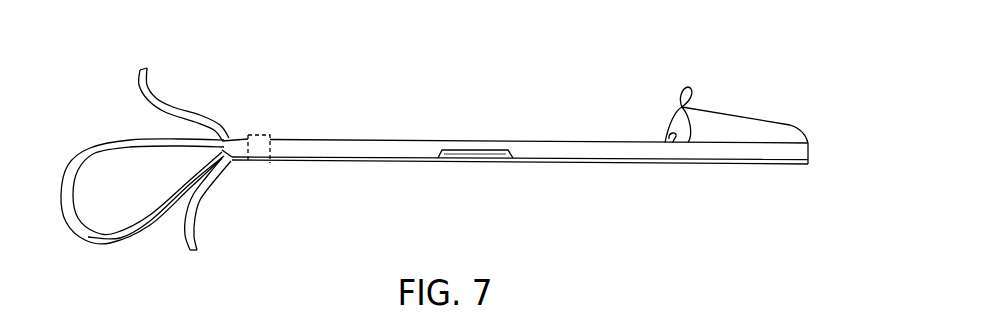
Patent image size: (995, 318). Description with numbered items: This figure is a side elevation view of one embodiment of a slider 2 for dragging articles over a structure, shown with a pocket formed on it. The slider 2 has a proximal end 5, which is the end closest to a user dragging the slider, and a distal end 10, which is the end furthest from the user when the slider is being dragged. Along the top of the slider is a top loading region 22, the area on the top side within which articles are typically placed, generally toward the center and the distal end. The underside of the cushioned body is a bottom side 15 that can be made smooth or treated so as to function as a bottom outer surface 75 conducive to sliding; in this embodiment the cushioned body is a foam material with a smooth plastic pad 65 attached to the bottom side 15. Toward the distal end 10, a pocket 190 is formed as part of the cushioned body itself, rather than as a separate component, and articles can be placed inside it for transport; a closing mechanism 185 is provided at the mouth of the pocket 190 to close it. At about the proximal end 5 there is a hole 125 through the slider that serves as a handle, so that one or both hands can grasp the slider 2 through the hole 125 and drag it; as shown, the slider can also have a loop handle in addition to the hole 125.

The slider 2 is at (236, 67).
The proximal end 5 is at (249, 117).
The top loading region 22 is at (387, 132).
The bottom side 15 is at (548, 158).
The bottom outer surface 75 is at (608, 163).
The hole 125 is at (265, 163).
The smooth plastic pad 65 is at (475, 159).
The pocket 190 is at (753, 118).
The closing mechanism 185 is at (690, 88).
The distal end 10 is at (801, 119).